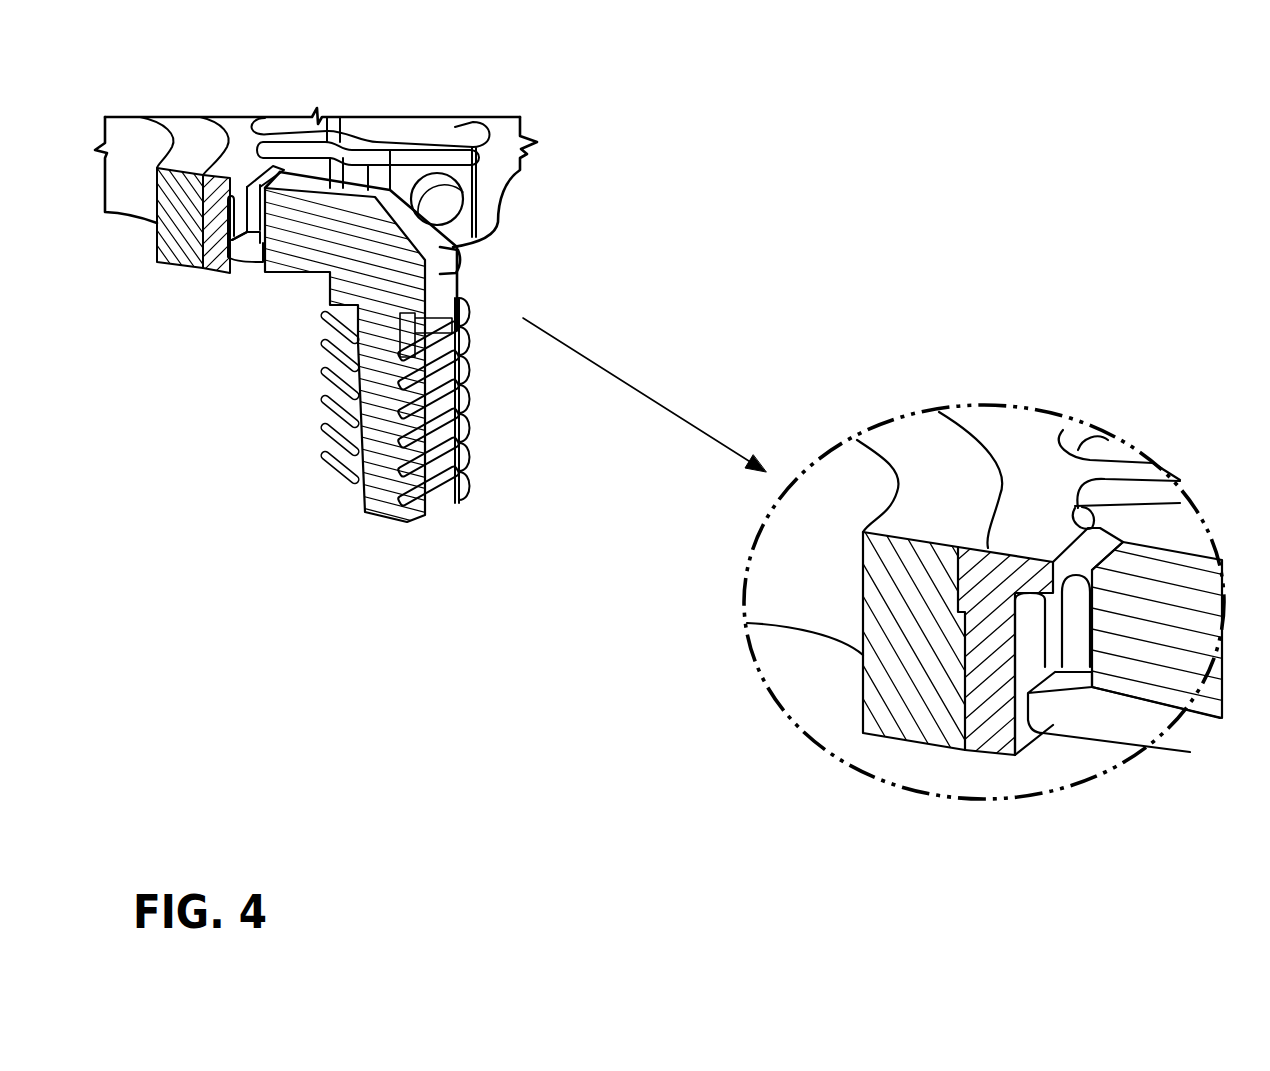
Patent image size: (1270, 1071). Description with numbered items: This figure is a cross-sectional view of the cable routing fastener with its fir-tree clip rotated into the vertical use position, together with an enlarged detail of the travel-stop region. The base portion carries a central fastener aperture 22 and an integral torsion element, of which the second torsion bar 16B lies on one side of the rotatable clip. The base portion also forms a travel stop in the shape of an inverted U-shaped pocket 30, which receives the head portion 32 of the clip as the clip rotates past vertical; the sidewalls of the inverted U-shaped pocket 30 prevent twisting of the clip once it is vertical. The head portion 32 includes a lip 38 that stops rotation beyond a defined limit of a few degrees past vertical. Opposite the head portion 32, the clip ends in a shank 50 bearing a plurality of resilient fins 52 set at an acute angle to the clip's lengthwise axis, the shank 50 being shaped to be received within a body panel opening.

The second torsion bar 16B is at (433, 200).
The central fastener aperture 22 is at (153, 138).
The inverted U-shaped pocket 30 is at (263, 198).
The head portion 32 is at (340, 188).
The lip 38 is at (250, 262).
The shank 50 is at (383, 488).
The resilient fins 52 is at (472, 343).